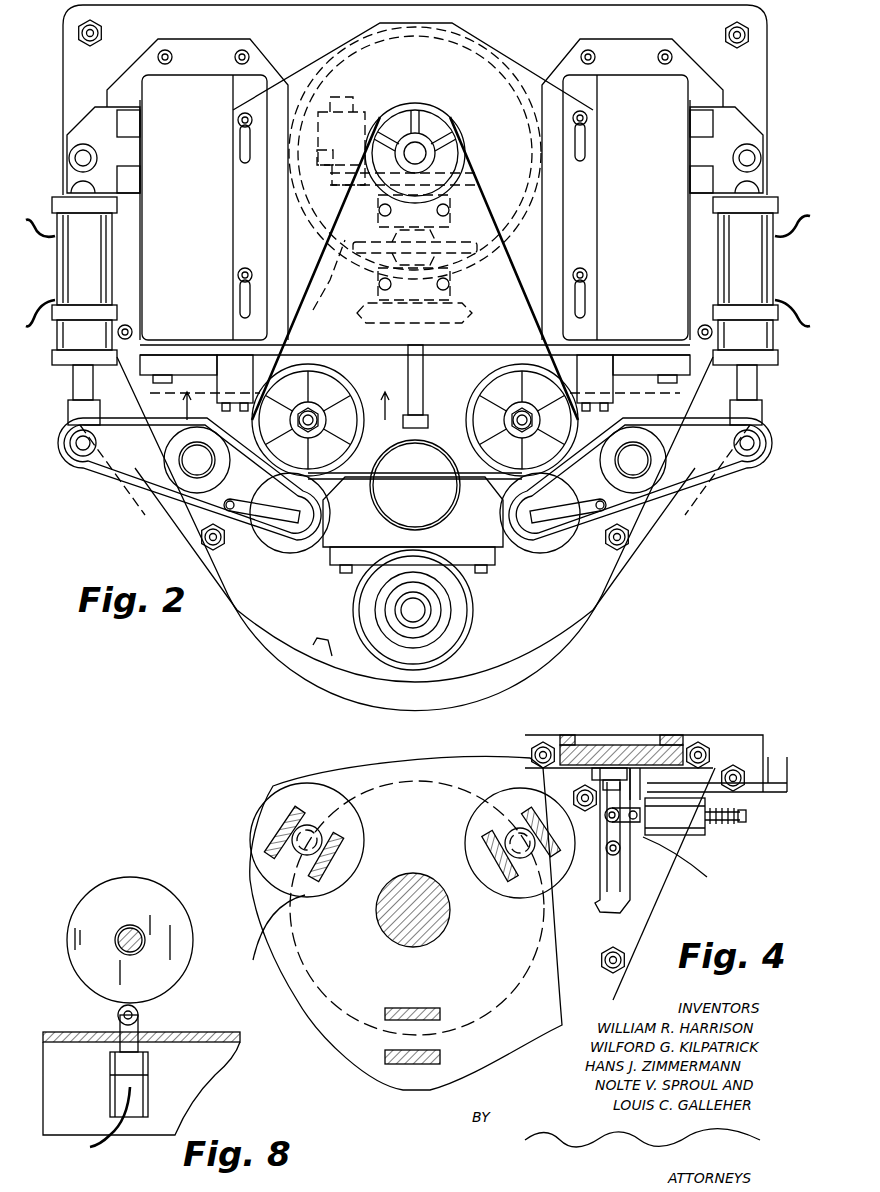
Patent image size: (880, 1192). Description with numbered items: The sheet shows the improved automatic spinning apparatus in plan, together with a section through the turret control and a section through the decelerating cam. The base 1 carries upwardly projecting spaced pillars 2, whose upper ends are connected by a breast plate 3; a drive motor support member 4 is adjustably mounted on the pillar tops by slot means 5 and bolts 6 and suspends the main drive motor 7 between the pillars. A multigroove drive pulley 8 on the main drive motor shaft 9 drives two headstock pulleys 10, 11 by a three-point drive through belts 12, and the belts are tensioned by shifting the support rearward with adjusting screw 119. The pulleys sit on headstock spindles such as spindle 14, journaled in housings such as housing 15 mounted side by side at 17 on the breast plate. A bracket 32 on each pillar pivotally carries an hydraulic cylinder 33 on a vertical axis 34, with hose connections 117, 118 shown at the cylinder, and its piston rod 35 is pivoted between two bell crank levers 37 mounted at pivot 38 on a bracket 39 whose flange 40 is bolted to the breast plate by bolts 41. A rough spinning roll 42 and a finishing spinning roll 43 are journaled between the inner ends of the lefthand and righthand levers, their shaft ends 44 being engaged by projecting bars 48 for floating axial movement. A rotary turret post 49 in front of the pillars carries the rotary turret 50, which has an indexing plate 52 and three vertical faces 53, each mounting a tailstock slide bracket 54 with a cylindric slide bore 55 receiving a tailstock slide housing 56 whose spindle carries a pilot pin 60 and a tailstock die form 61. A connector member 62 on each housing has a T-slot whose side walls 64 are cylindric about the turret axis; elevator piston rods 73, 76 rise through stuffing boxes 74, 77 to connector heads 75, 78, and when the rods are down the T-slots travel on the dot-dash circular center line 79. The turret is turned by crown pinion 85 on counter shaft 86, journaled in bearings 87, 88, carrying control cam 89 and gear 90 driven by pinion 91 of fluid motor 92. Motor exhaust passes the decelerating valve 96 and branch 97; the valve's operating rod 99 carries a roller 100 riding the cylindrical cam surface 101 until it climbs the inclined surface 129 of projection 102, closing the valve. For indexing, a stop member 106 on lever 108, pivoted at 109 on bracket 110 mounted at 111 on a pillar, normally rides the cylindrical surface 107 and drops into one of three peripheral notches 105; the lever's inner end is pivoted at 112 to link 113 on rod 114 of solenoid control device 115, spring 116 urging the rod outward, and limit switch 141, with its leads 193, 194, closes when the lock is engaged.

In FIG. 2, the base 1 is at (757, 62).
In FIG. 8, the base 1 is at (215, 1032).
In FIG. 2, the pillars 2 is at (185, 80).
In FIG. 4, the pillars 2 is at (573, 735).
In FIG. 2, the breast plate 3 is at (628, 346).
In FIG. 2, the drive motor support member 4 is at (522, 67).
In FIG. 2, the slot means 5 is at (240, 300).
In FIG. 2, the bolts 6 is at (238, 276).
In FIG. 2, the main drive motor 7 is at (305, 52).
In FIG. 2, the multigroove drive pulley 8 is at (447, 122).
In FIG. 2, the main drive motor shaft 9 is at (420, 153).
In FIG. 2, the headstock pulley 10 is at (332, 390).
In FIG. 2, the headstock pulley 11 is at (470, 422).
In FIG. 2, the belts 12 is at (330, 250).
In FIG. 2, the headstock spindle 14 is at (526, 412).
In FIG. 2, the headstock housing 15 is at (314, 412).
In FIG. 2, the headstock housing mounting 17 is at (244, 396).
In FIG. 2, the bracket 32 is at (122, 138).
In FIG. 2, the hydraulic cylinder 33 is at (415, 311).
In FIG. 2, the vertical pivot axis 34 is at (78, 158).
In FIG. 2, the piston rod 35 is at (75, 386).
In FIG. 2, the bell crank levers 37 is at (118, 478).
In FIG. 2, the bell crank pivot 38 is at (190, 466).
In FIG. 2, the bracket 39 is at (155, 393).
In FIG. 2, the flange 40 is at (182, 358).
In FIG. 2, the bolts 41 is at (165, 357).
In FIG. 2, the rough spinning roll 42 is at (292, 552).
In FIG. 2, the finishing spinning roll 43 is at (540, 552).
In FIG. 2, the spinning roll shaft ends 44 is at (262, 535).
In FIG. 2, the projecting bar 48 is at (248, 512).
In FIG. 4, the rotary turret post 49 is at (411, 880).
In FIG. 2, the rotary turret 50 is at (413, 525).
In FIG. 2, the indexing plate 52 is at (538, 622).
In FIG. 4, the indexing plate 52 is at (580, 992).
In FIG. 2, the turret faces 53 is at (490, 480).
In FIG. 2, the tailstock slide bracket 54 is at (395, 418).
In FIG. 2, the tailstock slide bore 55 is at (335, 495).
In FIG. 2, the tailstock slide housing 56 is at (75, 462).
In FIG. 2, the pilot pin 60 is at (418, 612).
In FIG. 2, the tailstock die form 61 is at (450, 632).
In FIG. 4, the connector member 62 is at (275, 838).
In FIG. 4, the T-slot side walls 64 is at (330, 830).
In FIG. 4, the elevator piston rod 73 is at (322, 815).
In FIG. 4, the stuffing box 74 is at (311, 792).
In FIG. 4, the connector head 75 is at (300, 862).
In FIG. 4, the elevator piston rod 76 is at (507, 832).
In FIG. 4, the stuffing box 77 is at (470, 830).
In FIG. 4, the connector head 78 is at (524, 860).
In FIG. 4, the circular center line 79 is at (290, 908).
In FIG. 2, the crown pinion 85 is at (470, 316).
In FIG. 8, the counter shaft 86 is at (140, 935).
In FIG. 2, the bearing 87 is at (452, 212).
In FIG. 2, the bearing 88 is at (452, 280).
In FIG. 2, the control cam 89 is at (480, 243).
In FIG. 8, the control cam 89 is at (186, 944).
In FIG. 2, the gear 90 is at (468, 184).
In FIG. 2, the pinion 91 is at (322, 182).
In FIG. 2, the fluid motor 92 is at (345, 102).
In FIG. 8, the decelerating valve 96 is at (148, 1082).
In FIG. 8, the branch line 97 is at (108, 1140).
In FIG. 8, the operating rod 99 is at (140, 1035).
In FIG. 8, the roller 100 is at (140, 1012).
In FIG. 8, the cylindrical cam surface 101 is at (75, 930).
In FIG. 8, the cam projection 102 is at (118, 1015).
In FIG. 2, the peripheral notches 105 is at (658, 528).
In FIG. 4, the stop member 106 is at (600, 905).
In FIG. 2, the cylindrical surface 107 is at (385, 688).
In FIG. 4, the cylindrical surface 107 is at (605, 942).
In FIG. 4, the lever 108 is at (620, 878).
In FIG. 4, the lever pivot 109 is at (626, 850).
In FIG. 4, the bracket 110 is at (642, 768).
In FIG. 4, the bracket mounting 111 is at (612, 768).
In FIG. 4, the link pivot 112 is at (606, 818).
In FIG. 4, the link 113 is at (633, 768).
In FIG. 4, the solenoid rod 114 is at (702, 872).
In FIG. 4, the solenoid control device 115 is at (675, 816).
In FIG. 4, the spring 116 is at (742, 818).
In FIG. 2, the hose 117 is at (36, 230).
In FIG. 2, the hose 118 is at (414, 314).
In FIG. 2, the adjusting screw 119 is at (425, 385).
In FIG. 8, the inclined surface 129 is at (115, 1005).
In FIG. 4, the limit switch 141 is at (680, 800).
In FIG. 4, the lead 193 is at (787, 757).
In FIG. 4, the lead 194 is at (768, 757).